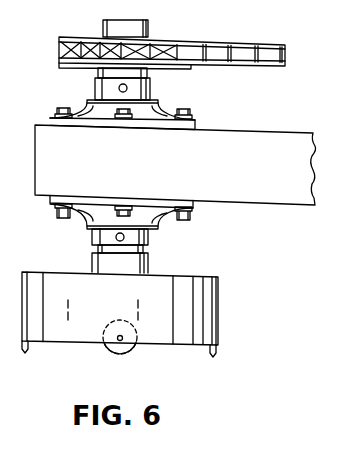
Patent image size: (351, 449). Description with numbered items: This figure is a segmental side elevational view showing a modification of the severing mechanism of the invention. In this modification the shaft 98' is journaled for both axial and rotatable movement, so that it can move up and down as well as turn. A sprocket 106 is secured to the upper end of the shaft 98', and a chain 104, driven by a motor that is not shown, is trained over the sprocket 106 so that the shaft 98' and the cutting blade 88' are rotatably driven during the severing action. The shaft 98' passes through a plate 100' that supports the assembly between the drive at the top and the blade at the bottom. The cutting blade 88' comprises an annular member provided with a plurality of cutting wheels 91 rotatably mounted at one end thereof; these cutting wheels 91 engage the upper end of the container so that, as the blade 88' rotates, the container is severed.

The sprocket 106 is at (168, 37).
The chain 104 is at (280, 66).
The plate 100' is at (176, 183).
The shaft 98' is at (149, 251).
The cutting blade 88' is at (149, 313).
The cutting wheels 91 is at (127, 352).